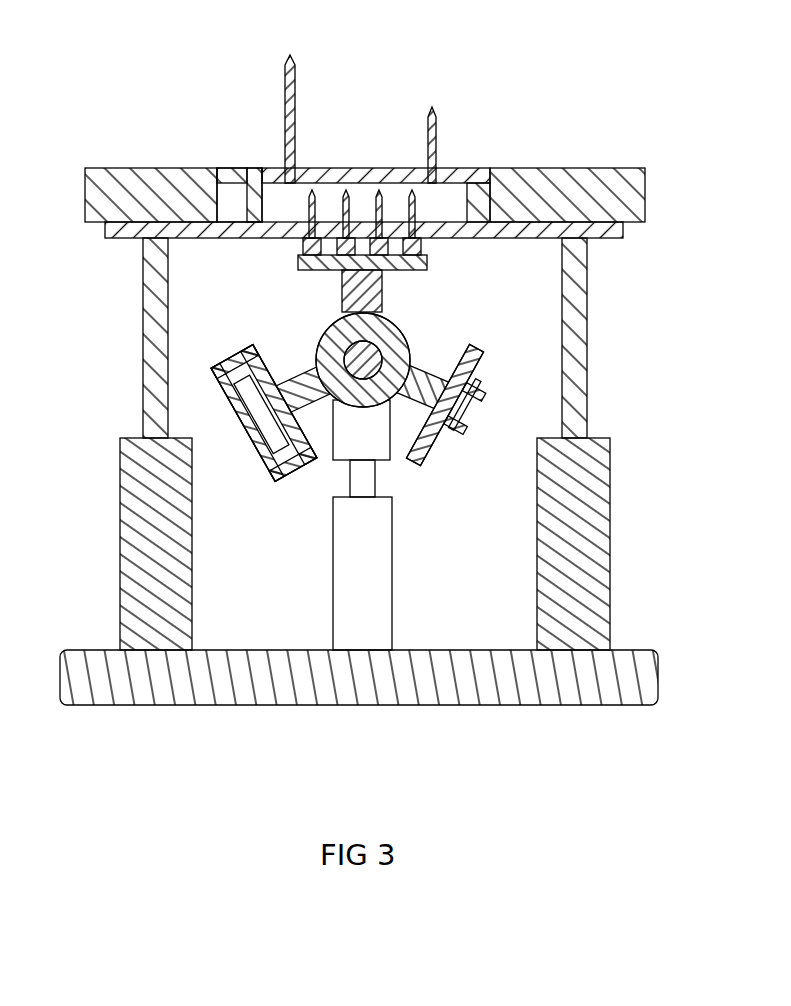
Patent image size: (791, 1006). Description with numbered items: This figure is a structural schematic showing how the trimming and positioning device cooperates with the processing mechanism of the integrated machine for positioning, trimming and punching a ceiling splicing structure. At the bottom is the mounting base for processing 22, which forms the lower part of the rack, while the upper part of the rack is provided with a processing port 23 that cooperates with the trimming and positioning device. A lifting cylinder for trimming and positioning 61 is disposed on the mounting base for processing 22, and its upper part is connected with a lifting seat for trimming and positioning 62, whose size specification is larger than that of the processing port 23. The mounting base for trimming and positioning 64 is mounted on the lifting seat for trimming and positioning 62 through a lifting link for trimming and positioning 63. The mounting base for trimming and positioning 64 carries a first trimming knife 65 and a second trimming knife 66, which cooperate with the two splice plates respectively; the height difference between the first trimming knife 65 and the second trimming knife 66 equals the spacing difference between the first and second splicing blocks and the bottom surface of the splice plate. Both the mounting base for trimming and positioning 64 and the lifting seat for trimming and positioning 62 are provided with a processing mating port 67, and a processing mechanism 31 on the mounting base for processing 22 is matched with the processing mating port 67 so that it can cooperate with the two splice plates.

The mounting base for processing 22 is at (307, 683).
The processing port 23 is at (232, 205).
The processing mechanism 31 is at (353, 437).
The lifting cylinder for trimming and positioning 61 is at (147, 513).
The lifting seat for trimming and positioning 62 is at (132, 222).
The lifting link for trimming and positioning 63 is at (525, 183).
The mounting base for trimming and positioning 64 is at (450, 175).
The first trimming knife 65 is at (285, 100).
The second trimming knife 66 is at (428, 130).
The processing mating port 67 is at (370, 175).